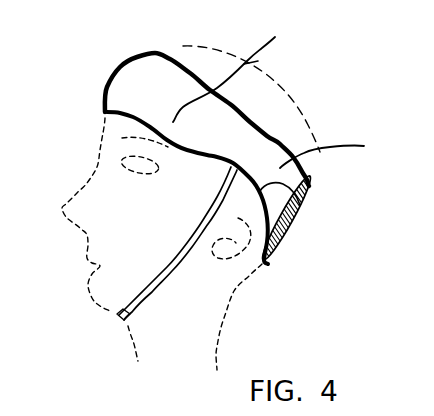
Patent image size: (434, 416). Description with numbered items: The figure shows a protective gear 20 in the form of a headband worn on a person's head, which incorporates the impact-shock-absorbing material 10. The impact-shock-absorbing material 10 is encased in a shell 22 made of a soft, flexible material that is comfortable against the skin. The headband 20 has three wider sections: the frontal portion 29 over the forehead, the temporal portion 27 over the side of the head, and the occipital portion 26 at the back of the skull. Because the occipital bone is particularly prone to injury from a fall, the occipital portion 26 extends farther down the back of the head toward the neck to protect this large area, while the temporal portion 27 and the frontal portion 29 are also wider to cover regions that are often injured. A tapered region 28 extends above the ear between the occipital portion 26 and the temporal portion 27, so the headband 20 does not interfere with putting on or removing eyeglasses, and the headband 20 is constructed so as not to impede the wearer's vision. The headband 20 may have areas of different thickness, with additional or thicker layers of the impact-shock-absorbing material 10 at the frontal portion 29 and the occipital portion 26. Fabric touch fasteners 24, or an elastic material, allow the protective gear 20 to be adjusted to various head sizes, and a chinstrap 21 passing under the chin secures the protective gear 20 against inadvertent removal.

The impact-shock-absorbing material 10 is at (240, 147).
The protective gear 20 is at (364, 146).
The chinstrap 21 is at (117, 317).
The shell 22 is at (139, 92).
The fabric touch fasteners 24 is at (294, 222).
The occipital portion 26 is at (272, 260).
The temporal portion 27 is at (238, 72).
The tapered region 28 is at (308, 186).
The frontal portion 29 is at (107, 87).